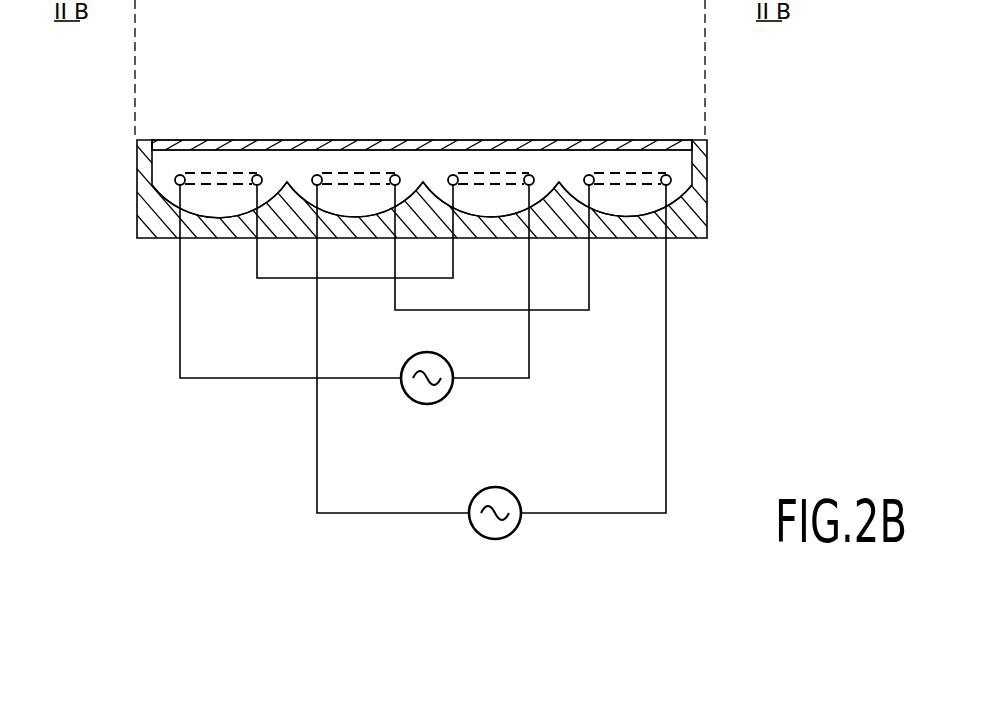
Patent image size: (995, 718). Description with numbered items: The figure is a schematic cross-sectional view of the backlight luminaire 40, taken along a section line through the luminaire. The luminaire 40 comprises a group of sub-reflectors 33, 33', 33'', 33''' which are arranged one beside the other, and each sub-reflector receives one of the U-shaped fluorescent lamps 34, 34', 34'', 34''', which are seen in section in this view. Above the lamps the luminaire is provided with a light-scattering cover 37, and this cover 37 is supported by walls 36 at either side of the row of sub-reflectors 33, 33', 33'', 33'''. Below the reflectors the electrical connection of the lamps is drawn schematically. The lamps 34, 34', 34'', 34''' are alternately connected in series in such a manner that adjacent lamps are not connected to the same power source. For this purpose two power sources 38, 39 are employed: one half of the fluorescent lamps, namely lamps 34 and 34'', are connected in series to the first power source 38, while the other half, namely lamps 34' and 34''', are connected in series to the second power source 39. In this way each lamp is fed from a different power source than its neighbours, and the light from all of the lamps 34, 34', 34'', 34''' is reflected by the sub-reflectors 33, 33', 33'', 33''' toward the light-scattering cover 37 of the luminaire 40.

The sub-reflector 33 is at (219, 233).
The sub-reflector 33' is at (355, 232).
The sub-reflector 33'' is at (491, 232).
The sub-reflector 33''' is at (625, 233).
The U-shaped fluorescent lamp 34 is at (218, 141).
The U-shaped fluorescent lamp 34' is at (356, 139).
The U-shaped fluorescent lamp 34'' is at (491, 139).
The U-shaped fluorescent lamp 34''' is at (627, 140).
The wall 36 is at (141, 191).
The light-scattering cover 37 is at (569, 139).
The first power source 38 is at (406, 362).
The second power source 39 is at (478, 495).
The backlight luminaire 40 is at (684, 111).